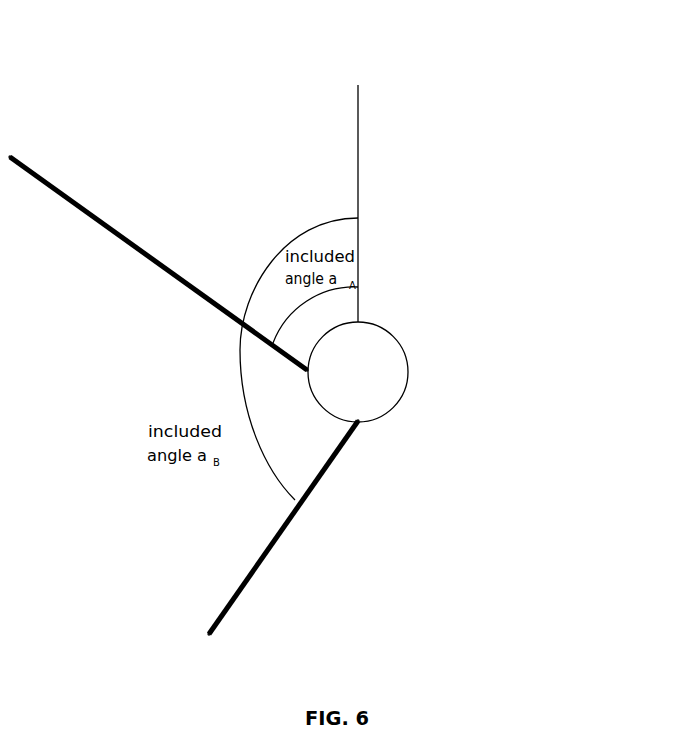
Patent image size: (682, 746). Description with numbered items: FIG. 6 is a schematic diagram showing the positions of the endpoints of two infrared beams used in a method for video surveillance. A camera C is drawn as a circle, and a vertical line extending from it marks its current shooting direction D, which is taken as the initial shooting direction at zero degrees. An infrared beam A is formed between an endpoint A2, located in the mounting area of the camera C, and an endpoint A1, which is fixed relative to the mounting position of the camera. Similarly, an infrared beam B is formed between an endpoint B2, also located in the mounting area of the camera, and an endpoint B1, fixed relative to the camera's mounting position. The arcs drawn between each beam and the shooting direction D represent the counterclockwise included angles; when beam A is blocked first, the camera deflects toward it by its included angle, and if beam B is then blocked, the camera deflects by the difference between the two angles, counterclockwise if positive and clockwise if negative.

The camera C is at (358, 372).
The current shooting direction D is at (470, 203).
The infrared beam A is at (160, 262).
The infrared beam B is at (235, 594).
The endpoint A1 is at (10, 157).
The endpoint A2 is at (307, 370).
The endpoint B1 is at (209, 636).
The endpoint B2 is at (360, 423).